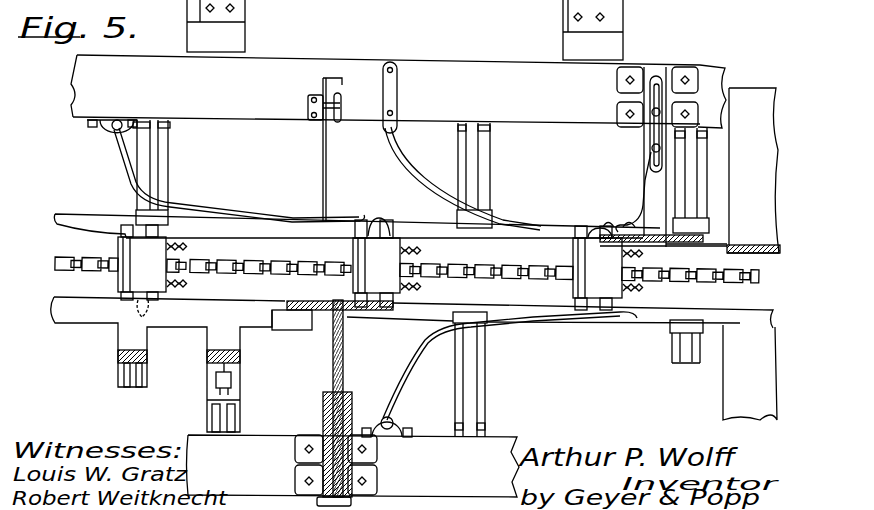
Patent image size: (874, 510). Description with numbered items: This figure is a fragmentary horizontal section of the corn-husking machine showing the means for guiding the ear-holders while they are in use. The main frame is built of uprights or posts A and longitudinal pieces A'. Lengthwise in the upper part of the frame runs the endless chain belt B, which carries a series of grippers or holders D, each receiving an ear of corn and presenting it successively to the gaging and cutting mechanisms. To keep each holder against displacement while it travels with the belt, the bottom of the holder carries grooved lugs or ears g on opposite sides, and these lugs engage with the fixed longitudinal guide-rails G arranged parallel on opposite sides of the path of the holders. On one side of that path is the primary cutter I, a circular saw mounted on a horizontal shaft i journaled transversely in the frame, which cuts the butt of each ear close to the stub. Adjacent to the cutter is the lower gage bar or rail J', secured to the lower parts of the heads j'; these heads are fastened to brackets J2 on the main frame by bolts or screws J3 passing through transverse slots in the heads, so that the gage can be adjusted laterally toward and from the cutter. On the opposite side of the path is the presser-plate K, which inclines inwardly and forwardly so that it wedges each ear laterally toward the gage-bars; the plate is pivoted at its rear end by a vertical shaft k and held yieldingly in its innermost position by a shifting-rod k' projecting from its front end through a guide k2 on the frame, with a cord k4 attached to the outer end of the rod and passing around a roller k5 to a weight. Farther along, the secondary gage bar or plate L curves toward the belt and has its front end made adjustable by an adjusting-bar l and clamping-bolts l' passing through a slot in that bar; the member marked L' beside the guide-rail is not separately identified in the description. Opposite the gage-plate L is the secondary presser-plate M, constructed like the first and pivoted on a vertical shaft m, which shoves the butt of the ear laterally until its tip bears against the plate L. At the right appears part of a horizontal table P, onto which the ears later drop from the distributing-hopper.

The uprights or posts A is at (405, 30).
The longitudinal pieces A' is at (398, 276).
The endless chain belt B is at (416, 273).
The grippers or holders D is at (380, 268).
The guide-rails G is at (732, 245).
The primary cutter I is at (327, 318).
The lower gage bar J' is at (412, 364).
The heads j' is at (162, 382).
The brackets J2 is at (209, 418).
The bolts or screws J3 is at (233, 382).
The presser-plate K is at (240, 207).
The vertical shaft k is at (112, 108).
The shifting-rod k' is at (312, 150).
The guide k2 is at (308, 104).
The cord k4 is at (338, 92).
The roller k5 is at (343, 105).
The secondary gage bar or plate L is at (462, 146).
The bar L' is at (663, 221).
The adjusting-bar l is at (627, 192).
The clamping-bolts l' is at (657, 157).
The secondary presser-plate M is at (515, 338).
The vertical shaft m is at (390, 432).
The table P is at (758, 129).
The grooved lugs or ears g is at (382, 236).
The horizontal shaft i is at (345, 365).